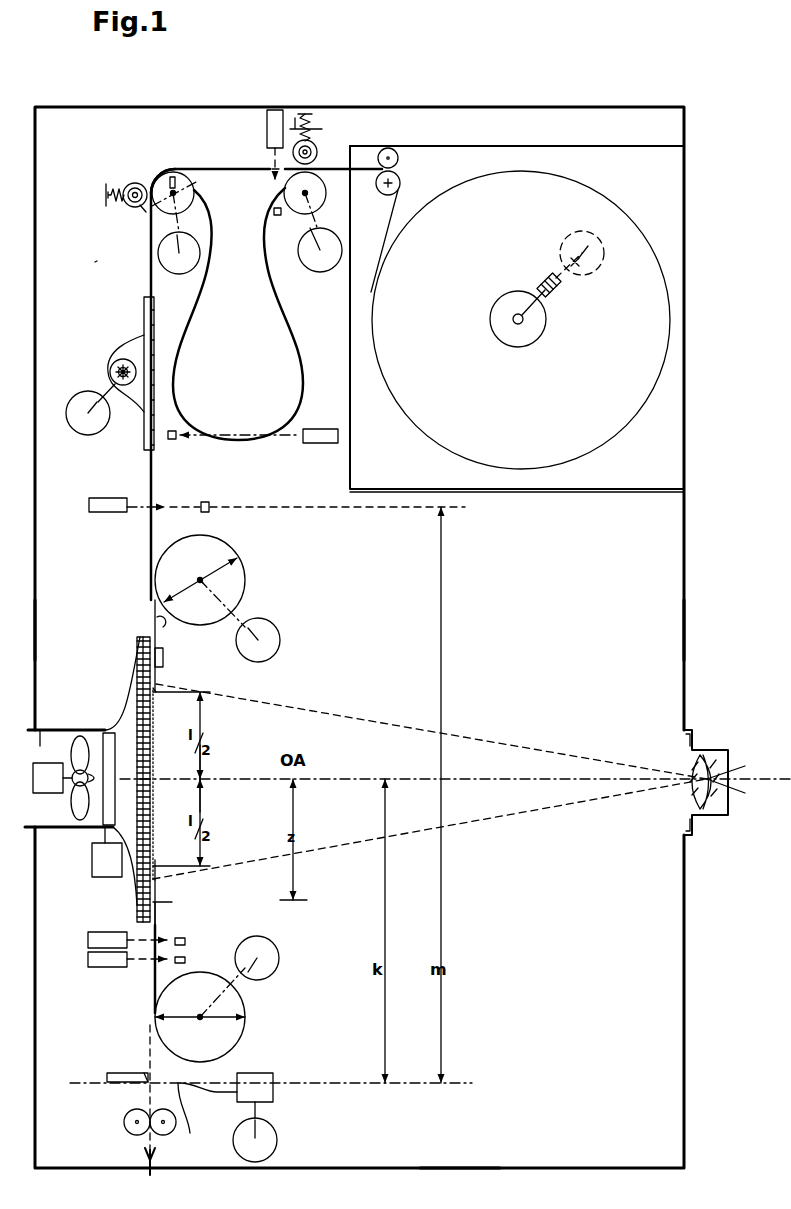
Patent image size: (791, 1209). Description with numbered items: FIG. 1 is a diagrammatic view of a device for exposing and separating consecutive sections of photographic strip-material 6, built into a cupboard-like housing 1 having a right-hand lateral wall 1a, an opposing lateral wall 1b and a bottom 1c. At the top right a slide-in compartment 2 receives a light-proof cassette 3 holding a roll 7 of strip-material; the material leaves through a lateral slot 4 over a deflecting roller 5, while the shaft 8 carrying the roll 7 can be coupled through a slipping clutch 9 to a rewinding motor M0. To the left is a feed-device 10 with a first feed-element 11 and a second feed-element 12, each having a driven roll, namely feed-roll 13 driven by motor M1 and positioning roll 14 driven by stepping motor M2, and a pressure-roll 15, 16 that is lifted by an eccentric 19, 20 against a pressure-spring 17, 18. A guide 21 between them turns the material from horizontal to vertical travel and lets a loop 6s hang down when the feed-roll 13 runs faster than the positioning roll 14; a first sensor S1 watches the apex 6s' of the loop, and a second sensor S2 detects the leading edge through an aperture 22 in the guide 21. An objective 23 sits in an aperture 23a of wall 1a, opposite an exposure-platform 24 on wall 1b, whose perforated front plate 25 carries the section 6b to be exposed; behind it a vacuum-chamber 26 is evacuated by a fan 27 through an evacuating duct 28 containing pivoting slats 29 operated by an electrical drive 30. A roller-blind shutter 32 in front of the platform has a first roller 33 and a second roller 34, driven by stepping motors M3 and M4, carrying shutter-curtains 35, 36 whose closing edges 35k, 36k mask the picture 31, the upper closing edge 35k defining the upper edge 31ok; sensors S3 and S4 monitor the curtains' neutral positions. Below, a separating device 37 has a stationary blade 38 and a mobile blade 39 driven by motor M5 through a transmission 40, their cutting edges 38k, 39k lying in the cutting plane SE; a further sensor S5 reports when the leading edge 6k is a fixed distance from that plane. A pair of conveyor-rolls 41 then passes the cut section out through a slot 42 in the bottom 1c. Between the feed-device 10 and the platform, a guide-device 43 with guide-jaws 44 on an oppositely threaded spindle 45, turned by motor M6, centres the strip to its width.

The housing 1 is at (684, 108).
The right-hand lateral wall 1a is at (685, 634).
The opposing lateral wall 1b is at (36, 636).
The bottom of the housing 1c is at (453, 1167).
The slide-in compartment 2 is at (640, 492).
The light-proof cassette 3 is at (597, 490).
The lateral slot 4 is at (353, 172).
The deflecting roller 5 is at (398, 171).
The photographic strip-material 6 is at (145, 292).
The loop of strip-material 6s is at (238, 314).
The apex of the loop 6s' is at (234, 452).
The section of strip-material to be exposed 6b is at (155, 800).
The leading edge of strip-material 6k is at (158, 858).
The roll of photographic strip-material 7 is at (473, 182).
The shaft 8 is at (505, 303).
The slipping clutch 9 is at (542, 275).
The feed-device 10 is at (95, 262).
The first feed-element 11 is at (313, 118).
The second feed-element 12 is at (148, 152).
The feed-roll 13 is at (302, 214).
The positioning roll 14 is at (168, 217).
The pressure-roll 15 is at (317, 160).
The pressure-roll 16 is at (145, 208).
The pressure-spring 17 is at (292, 128).
The pressure-spring 18 is at (105, 182).
The eccentric 19 is at (317, 145).
The eccentric 20 is at (128, 184).
The guide 21 is at (205, 164).
The aperture 22 is at (272, 162).
The objective 23 is at (712, 811).
The aperture 23a is at (683, 804).
The exposure-platform 24 is at (77, 684).
The front plate 25 is at (137, 673).
The vacuum-chamber 26 is at (128, 705).
The fan 27 is at (80, 738).
The evacuating duct 28 is at (48, 737).
The slats 29 is at (108, 810).
The electrical drive 30 is at (95, 867).
The picture 31 is at (156, 768).
The upper edge of picture 31ok is at (198, 730).
The roller-blind shutter 32 is at (271, 557).
The first roller 33 is at (243, 580).
The second roller 34 is at (240, 1040).
The upper shutter-curtain 35 is at (165, 623).
The closing edge 35k is at (165, 664).
The lower shutter-curtain 36 is at (158, 928).
The closing edge 36k is at (160, 902).
The separating device 37 is at (324, 1116).
The stationary blade 38 is at (115, 1072).
The cutting edge of stationary blade 38k is at (147, 1083).
The mobile blade 39 is at (217, 1092).
The cutting edge of mobile blade 39k is at (190, 1133).
The transmission 40 is at (270, 1098).
The pair of conveyor-rolls 41 is at (124, 1122).
The slot 42 is at (145, 1158).
The guide-device 43 is at (100, 366).
The guide-jaws 44 is at (145, 318).
The spindle 45 is at (121, 360).
The rewinding motor M0 is at (597, 253).
The drive-motor M1 is at (317, 268).
The stepping motor M2 is at (186, 275).
The stepping motor M3 is at (280, 643).
The stepping motor M4 is at (266, 978).
The electric motor M5 is at (278, 1140).
The electric motor M6 is at (79, 424).
The first sensor S1 is at (312, 444).
The second sensor S2 is at (267, 124).
The sensor S3 is at (88, 941).
The sensor S4 is at (88, 959).
The further sensor S5 is at (97, 498).
The cutting plane SE is at (302, 1083).